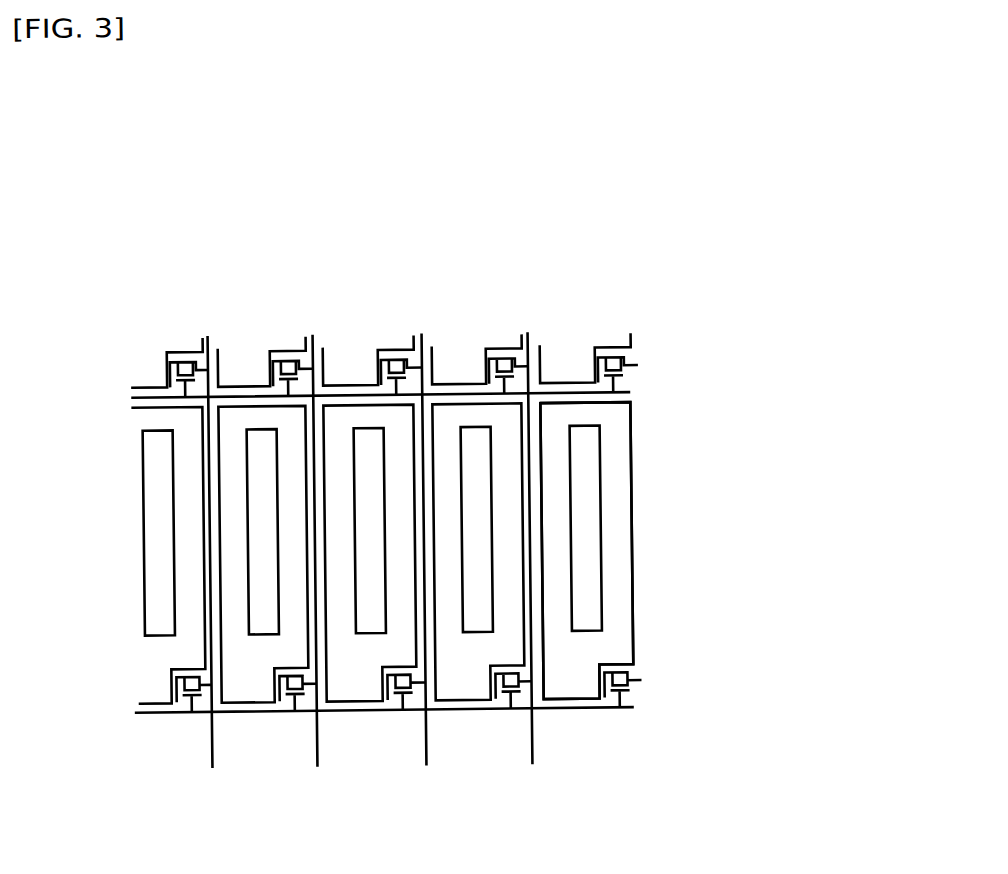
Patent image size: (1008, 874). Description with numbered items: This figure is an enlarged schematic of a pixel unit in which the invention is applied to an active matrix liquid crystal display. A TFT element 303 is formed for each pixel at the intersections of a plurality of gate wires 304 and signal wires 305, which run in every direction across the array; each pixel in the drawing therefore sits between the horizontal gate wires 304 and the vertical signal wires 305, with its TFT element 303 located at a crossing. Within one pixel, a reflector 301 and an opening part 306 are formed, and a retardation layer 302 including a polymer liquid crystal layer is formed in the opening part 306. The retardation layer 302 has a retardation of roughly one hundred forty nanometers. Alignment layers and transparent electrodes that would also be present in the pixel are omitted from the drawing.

The reflector 301 is at (828, 503).
The retardation layer 302 is at (861, 428).
The TFT element 303 is at (400, 700).
The gate wire 304 is at (657, 834).
The signal wire 305 is at (380, 277).
The opening part 306 is at (830, 360).